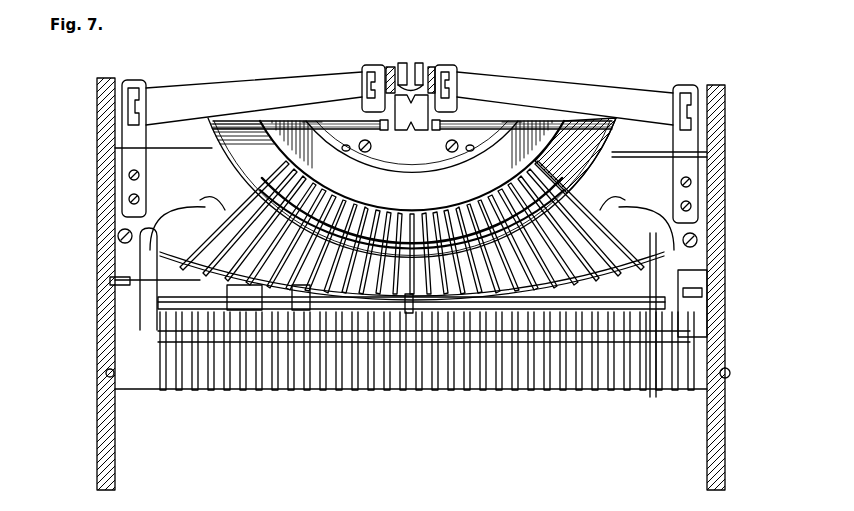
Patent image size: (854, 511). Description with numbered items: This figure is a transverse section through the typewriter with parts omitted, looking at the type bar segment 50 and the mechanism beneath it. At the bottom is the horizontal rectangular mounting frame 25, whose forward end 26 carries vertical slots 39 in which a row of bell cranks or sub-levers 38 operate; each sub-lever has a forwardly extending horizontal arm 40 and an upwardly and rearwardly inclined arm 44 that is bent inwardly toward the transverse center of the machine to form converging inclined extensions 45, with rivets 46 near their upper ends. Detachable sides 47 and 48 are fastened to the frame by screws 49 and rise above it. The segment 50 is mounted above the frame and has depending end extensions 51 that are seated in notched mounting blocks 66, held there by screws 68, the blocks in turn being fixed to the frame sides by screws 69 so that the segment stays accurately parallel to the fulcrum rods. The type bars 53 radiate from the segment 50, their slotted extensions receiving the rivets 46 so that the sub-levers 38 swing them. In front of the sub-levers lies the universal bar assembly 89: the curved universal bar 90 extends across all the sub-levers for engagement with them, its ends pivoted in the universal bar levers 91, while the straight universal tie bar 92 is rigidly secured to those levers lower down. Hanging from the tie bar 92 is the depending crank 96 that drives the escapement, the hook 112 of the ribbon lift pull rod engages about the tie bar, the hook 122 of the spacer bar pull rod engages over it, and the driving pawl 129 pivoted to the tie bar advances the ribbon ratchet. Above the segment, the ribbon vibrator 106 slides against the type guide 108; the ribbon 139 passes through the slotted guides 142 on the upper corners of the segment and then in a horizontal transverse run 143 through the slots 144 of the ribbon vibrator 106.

The horizontal rectangular support or mounting frame 25 is at (682, 408).
The forward end 26 is at (133, 380).
The bell cranks or sub-levers 38 is at (353, 392).
The vertical slots 39 is at (272, 392).
The forwardly extending horizontal arms 40 is at (474, 392).
The upwardly and rearwardly inclined arms 44 is at (158, 300).
The converging inclined extensions 45 is at (604, 230).
The rivets or pins 46 is at (226, 212).
The detachable side 47 is at (115, 381).
The detachable side 48 is at (712, 354).
The screws 49 is at (106, 372).
The type bar segment 50 is at (586, 130).
The depending end extensions 51 is at (118, 250).
The type bars 53 is at (448, 212).
The intermediate adapters or mounting blocks 66 is at (160, 308).
The screws 68 is at (118, 235).
The screws 69 is at (110, 280).
The universal bar assembly 89 is at (622, 325).
The universal bar 90 is at (700, 278).
The universal bar levers or cranks 91 is at (296, 306).
The universal tie bar 92 is at (232, 306).
The depending crank 96 is at (303, 392).
The ribbon vibrator or guide 106 is at (454, 104).
The type guide 108 is at (424, 84).
The hook 112 is at (411, 392).
The hook 122 is at (660, 318).
The driving pawl 129 is at (225, 392).
The ribbon 139 is at (291, 79).
The slotted guides 142 is at (138, 80).
The horizontal transverse run 143 is at (345, 79).
The slots 144 is at (372, 74).